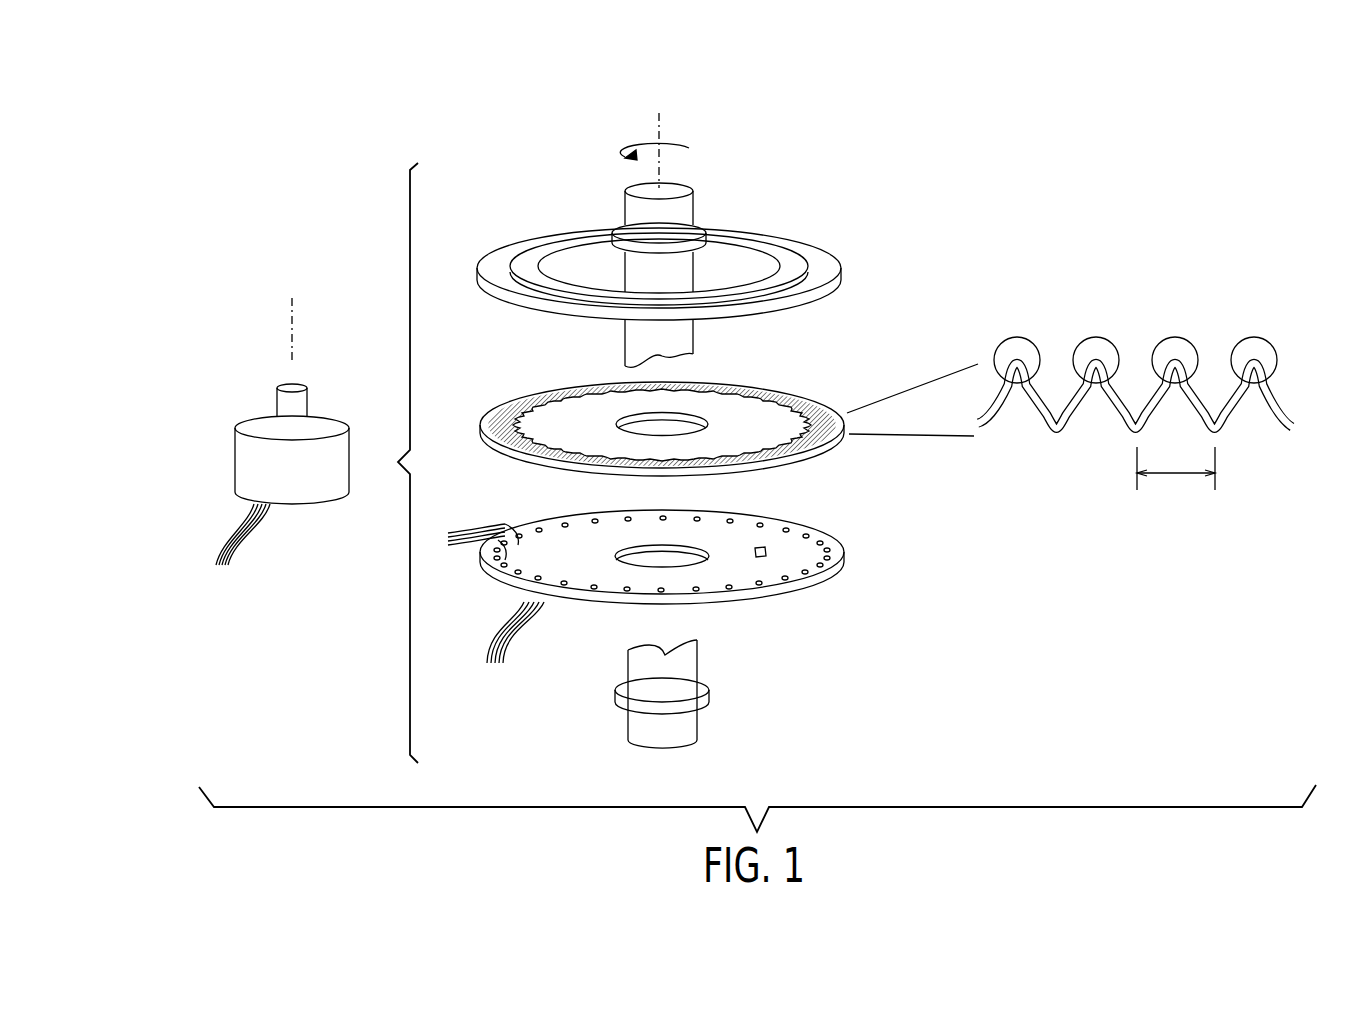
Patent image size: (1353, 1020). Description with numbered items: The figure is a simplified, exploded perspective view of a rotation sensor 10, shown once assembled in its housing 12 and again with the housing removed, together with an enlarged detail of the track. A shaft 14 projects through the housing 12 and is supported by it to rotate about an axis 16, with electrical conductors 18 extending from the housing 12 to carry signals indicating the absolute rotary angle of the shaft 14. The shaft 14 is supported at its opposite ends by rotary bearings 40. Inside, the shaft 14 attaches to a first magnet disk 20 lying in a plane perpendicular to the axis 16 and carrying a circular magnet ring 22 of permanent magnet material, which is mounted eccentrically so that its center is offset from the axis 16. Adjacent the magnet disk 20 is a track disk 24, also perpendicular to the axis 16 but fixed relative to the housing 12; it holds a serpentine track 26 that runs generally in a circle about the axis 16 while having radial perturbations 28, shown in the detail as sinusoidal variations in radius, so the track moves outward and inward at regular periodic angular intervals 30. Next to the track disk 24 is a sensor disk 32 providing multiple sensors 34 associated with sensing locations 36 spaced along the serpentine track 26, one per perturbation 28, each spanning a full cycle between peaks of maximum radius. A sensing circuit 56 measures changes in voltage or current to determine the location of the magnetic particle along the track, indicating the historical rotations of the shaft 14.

The rotation sensor 10 is at (763, 425).
The housing 12 is at (235, 461).
The shaft 14 is at (306, 405).
The axis 16 is at (294, 319).
The electrical conductors 18 is at (228, 542).
The first magnet disk 20 is at (681, 261).
The magnet ring 22 is at (795, 270).
The track disk 24 is at (808, 458).
The serpentine track 26 is at (512, 398).
The radial perturbations 28 is at (1088, 432).
The periodic angular intervals 30 is at (1175, 477).
The sensor disk 32 is at (660, 562).
The sensors 34 is at (468, 542).
The sensing locations 36 is at (1028, 342).
The rotary bearings 40 is at (707, 233).
The sensing circuit 56 is at (769, 548).